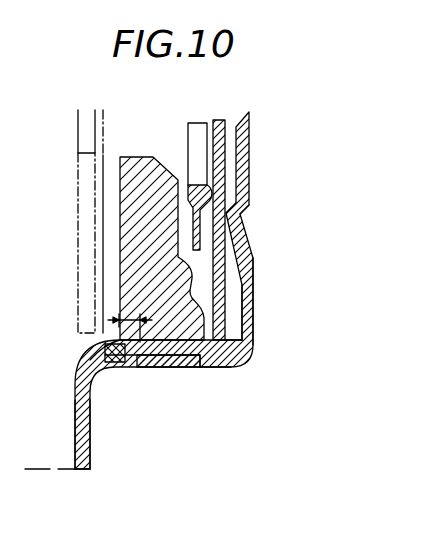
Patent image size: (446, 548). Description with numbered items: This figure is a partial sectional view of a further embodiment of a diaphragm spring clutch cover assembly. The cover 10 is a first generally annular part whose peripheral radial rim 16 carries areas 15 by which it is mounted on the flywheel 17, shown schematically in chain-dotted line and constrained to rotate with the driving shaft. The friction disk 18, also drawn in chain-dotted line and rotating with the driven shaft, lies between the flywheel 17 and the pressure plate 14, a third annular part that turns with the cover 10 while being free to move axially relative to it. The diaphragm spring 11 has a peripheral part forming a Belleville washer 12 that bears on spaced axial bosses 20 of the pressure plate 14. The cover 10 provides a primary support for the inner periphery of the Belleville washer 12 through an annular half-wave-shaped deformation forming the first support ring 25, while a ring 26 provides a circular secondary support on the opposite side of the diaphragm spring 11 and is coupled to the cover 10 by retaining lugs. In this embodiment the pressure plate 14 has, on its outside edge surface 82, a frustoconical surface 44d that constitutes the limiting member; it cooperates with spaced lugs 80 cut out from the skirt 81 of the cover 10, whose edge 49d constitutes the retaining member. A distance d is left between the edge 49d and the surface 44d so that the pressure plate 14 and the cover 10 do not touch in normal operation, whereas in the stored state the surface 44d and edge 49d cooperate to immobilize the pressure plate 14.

The cover 10 is at (252, 153).
The diaphragm spring 11 is at (232, 333).
The Belleville washer 12 is at (224, 293).
The pressure plate 14 is at (181, 343).
The areas 15 is at (91, 450).
The peripheral radial rim 16 is at (83, 470).
The flywheel 17 is at (50, 470).
The friction disk 18 is at (73, 174).
The axial bosses 20 is at (200, 355).
The first support ring 25 is at (237, 218).
The ring 26 is at (197, 122).
The frustoconical surface 44d is at (156, 342).
The edge 49d is at (120, 341).
The lugs 80 is at (115, 370).
The skirt 81 is at (140, 370).
The outside edge surface 82 is at (162, 370).
The distance d is at (130, 322).